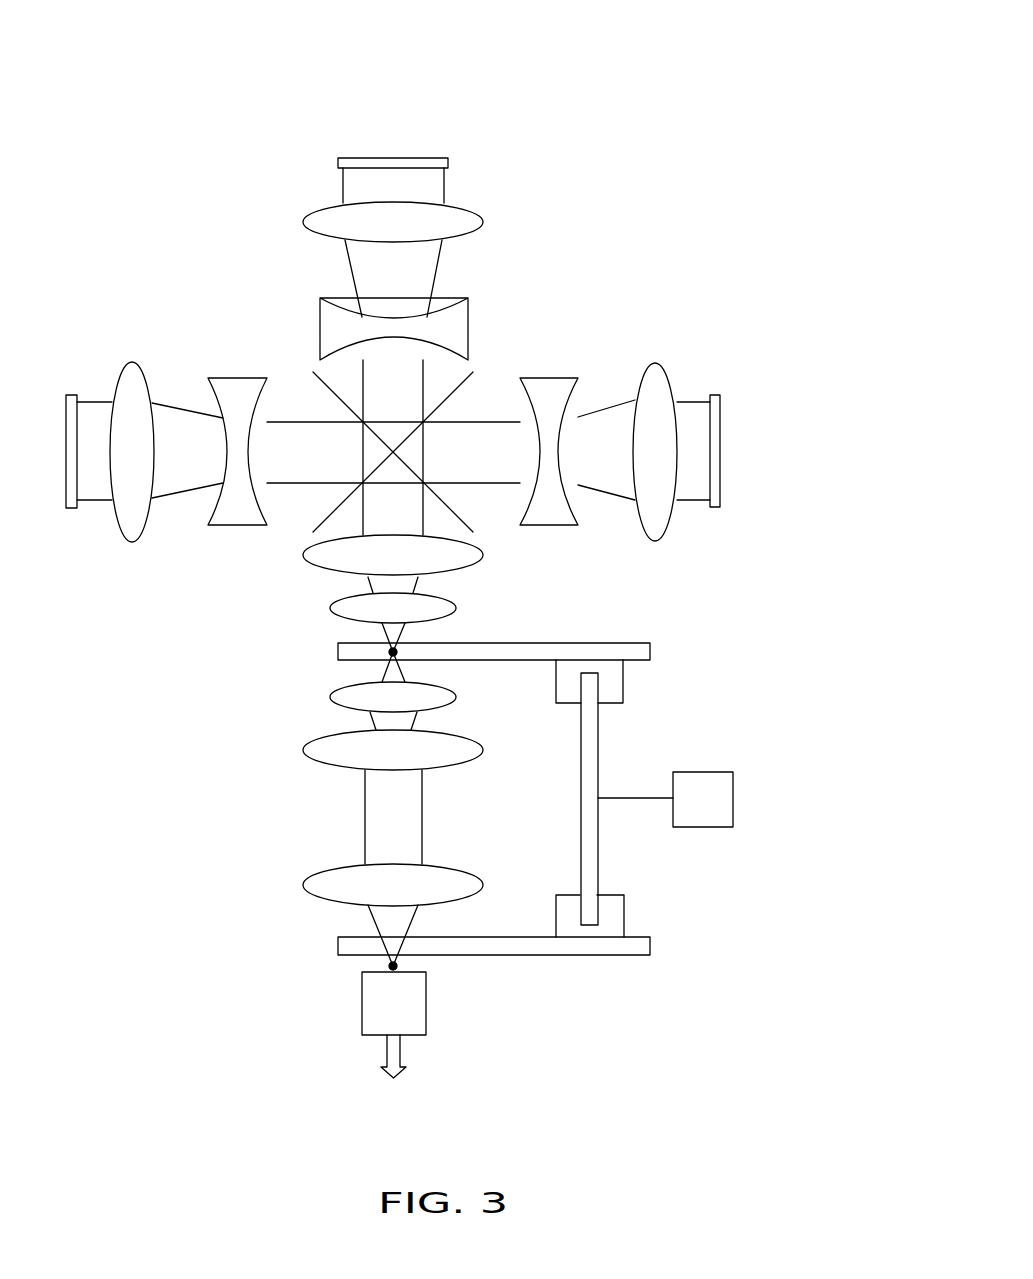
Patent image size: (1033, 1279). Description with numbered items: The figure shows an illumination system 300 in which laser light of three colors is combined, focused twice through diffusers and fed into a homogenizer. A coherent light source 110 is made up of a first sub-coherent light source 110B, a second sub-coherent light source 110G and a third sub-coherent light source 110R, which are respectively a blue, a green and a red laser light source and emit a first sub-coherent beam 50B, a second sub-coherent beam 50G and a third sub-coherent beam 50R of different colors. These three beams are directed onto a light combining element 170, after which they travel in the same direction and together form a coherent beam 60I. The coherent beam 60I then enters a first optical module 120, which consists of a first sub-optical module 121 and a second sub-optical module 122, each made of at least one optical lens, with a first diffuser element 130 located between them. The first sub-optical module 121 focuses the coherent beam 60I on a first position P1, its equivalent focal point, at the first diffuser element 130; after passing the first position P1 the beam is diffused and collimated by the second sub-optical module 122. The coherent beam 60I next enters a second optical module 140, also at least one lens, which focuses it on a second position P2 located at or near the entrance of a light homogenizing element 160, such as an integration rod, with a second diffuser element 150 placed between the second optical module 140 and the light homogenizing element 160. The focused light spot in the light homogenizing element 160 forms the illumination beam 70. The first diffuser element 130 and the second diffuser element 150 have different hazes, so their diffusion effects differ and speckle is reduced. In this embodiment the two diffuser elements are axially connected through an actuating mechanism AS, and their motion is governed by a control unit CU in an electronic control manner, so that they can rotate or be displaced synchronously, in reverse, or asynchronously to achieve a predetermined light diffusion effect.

The illumination system 300 is at (715, 1082).
The coherent light source 110 is at (793, 5).
The third sub-coherent light source 110R is at (714, 395).
The second sub-coherent light source 110G is at (450, 161).
The first sub-coherent light source 110B is at (72, 398).
The third sub-coherent beam 50R is at (604, 415).
The second sub-coherent beam 50G is at (417, 277).
The first sub-coherent beam 50B is at (180, 420).
The coherent beam 60I is at (423, 520).
The light combining element 170 is at (453, 377).
The first optical module 120 is at (236, 572).
The first sub-optical module 121 is at (333, 608).
The second sub-optical module 122 is at (312, 748).
The first position P1 is at (398, 650).
The second position P2 is at (400, 965).
The first diffuser element 130 is at (533, 653).
The second diffuser element 150 is at (533, 947).
The second optical module 140 is at (318, 886).
The light homogenizing element 160 is at (375, 1010).
The illumination beam 70 is at (387, 1049).
The actuating mechanism AS is at (617, 684).
The control unit CU is at (705, 772).